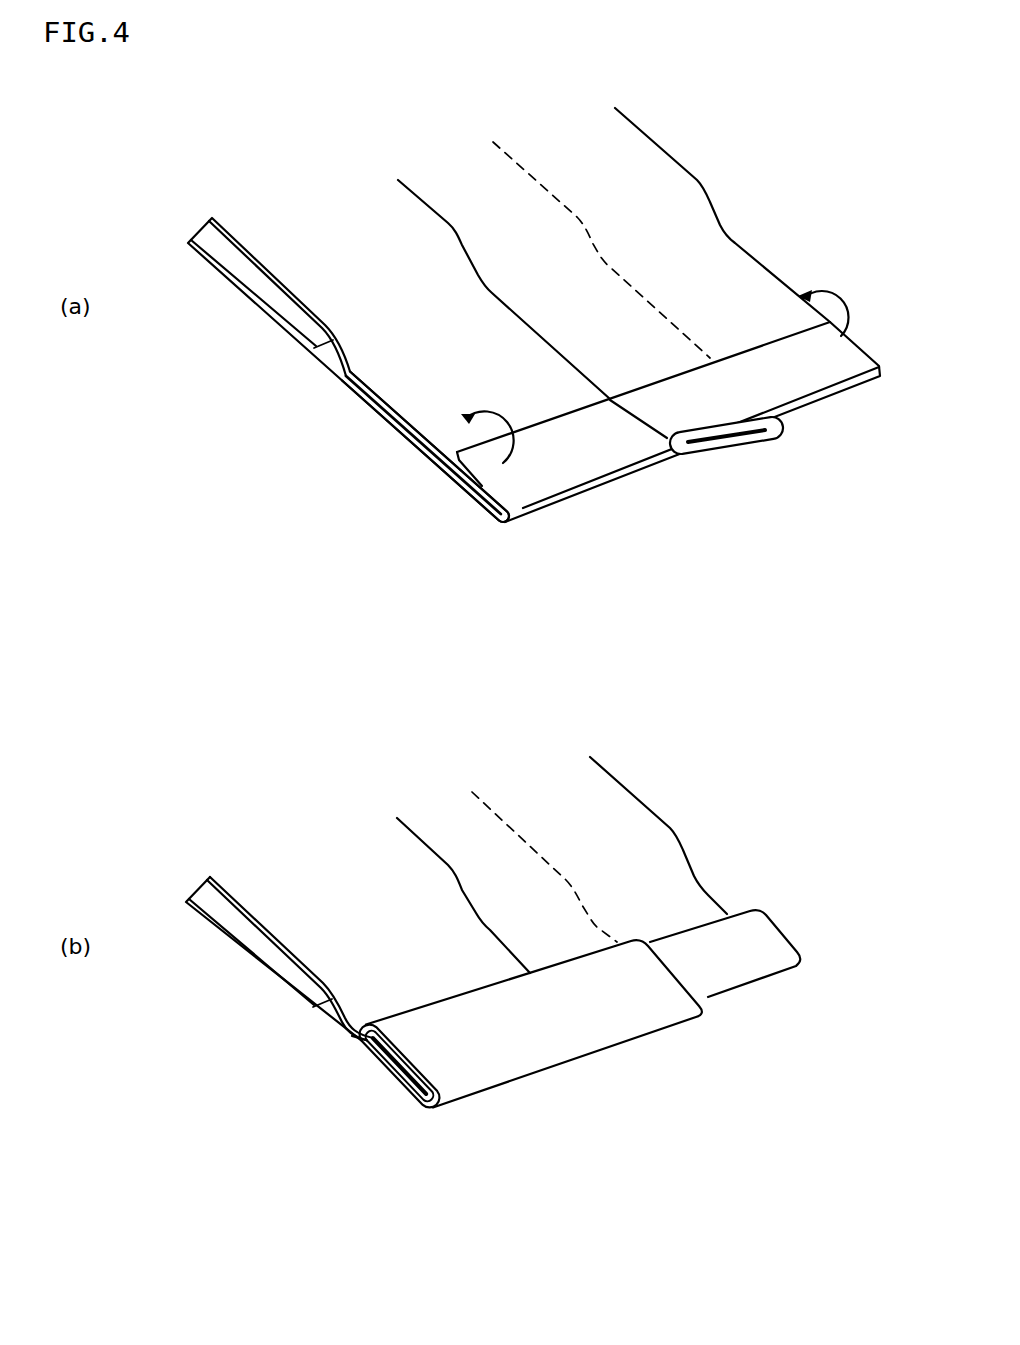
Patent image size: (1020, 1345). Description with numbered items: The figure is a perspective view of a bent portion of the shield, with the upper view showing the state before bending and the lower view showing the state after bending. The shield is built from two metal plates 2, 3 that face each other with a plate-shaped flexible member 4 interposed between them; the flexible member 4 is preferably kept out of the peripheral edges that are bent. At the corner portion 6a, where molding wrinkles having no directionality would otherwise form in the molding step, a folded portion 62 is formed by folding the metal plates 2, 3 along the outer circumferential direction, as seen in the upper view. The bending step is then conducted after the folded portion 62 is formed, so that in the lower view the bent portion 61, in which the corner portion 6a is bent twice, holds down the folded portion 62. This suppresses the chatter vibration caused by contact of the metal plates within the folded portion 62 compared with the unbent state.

The metal plate 2 is at (360, 353).
The metal plate 3 is at (313, 349).
The flexible member 4 is at (288, 313).
The corner portion 6a is at (758, 470).
The bent portion 61 is at (603, 442).
The folded portion 62 is at (545, 347).